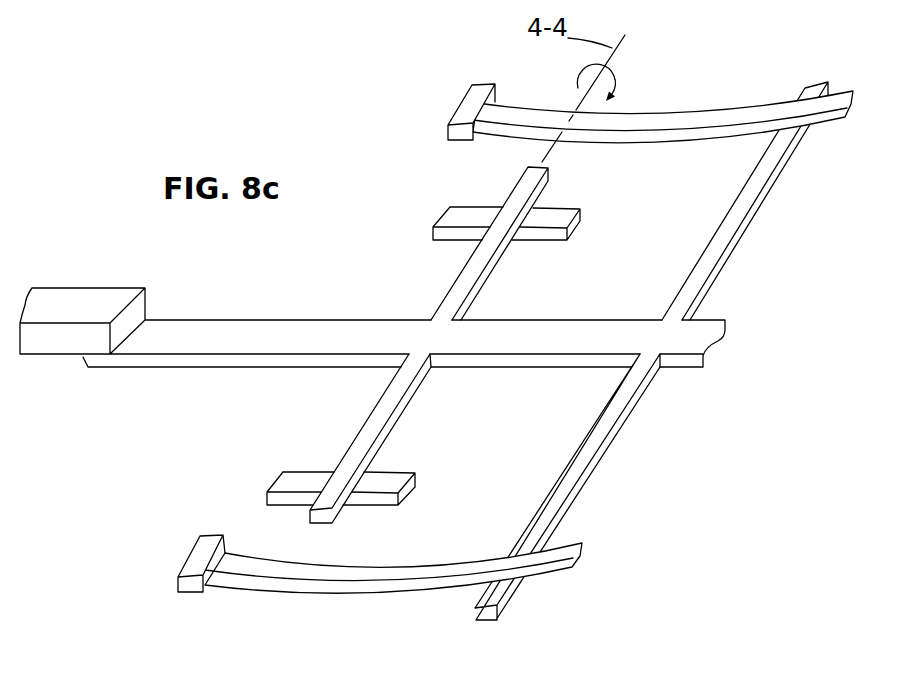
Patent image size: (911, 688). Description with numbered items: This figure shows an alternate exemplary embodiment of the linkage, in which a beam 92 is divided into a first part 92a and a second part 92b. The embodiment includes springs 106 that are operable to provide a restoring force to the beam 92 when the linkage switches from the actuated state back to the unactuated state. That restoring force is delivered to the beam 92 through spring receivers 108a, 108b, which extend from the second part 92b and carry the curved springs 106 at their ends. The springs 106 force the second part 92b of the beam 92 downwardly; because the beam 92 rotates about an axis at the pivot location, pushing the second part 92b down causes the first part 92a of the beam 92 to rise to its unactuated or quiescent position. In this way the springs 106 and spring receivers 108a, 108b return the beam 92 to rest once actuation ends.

The beam 92 is at (372, 345).
The first part of the beam 92a is at (255, 335).
The second part of the beam 92b is at (567, 333).
The springs 106 is at (662, 137).
The spring receiver 108a is at (600, 430).
The spring receiver 108b is at (712, 247).